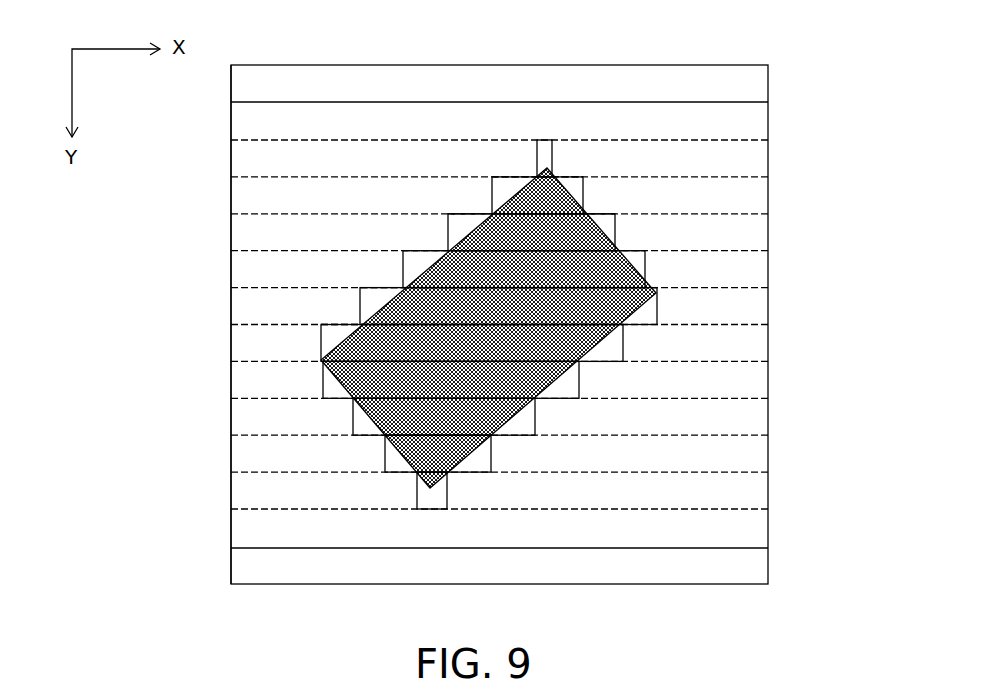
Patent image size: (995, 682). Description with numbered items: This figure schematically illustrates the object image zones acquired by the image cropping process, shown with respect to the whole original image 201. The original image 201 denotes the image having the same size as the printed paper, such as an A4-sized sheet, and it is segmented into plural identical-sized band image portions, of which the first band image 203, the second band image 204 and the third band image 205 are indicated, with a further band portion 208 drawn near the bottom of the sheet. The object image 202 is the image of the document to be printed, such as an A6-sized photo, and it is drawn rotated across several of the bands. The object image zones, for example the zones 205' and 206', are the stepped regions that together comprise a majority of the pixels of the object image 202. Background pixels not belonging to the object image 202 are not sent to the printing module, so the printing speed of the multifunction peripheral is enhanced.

The original image 201 is at (548, 63).
The object image 202 is at (565, 378).
The first band image 203 is at (245, 78).
The second band image 204 is at (750, 78).
The third band image 205 is at (542, 303).
The object image zone 205' is at (506, 145).
The object image zone 206' is at (489, 343).
The bottom layer 208 is at (750, 533).